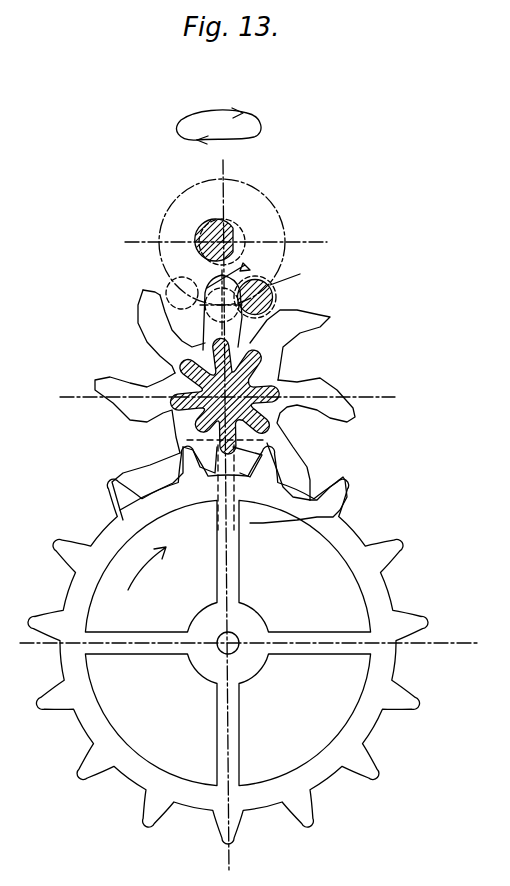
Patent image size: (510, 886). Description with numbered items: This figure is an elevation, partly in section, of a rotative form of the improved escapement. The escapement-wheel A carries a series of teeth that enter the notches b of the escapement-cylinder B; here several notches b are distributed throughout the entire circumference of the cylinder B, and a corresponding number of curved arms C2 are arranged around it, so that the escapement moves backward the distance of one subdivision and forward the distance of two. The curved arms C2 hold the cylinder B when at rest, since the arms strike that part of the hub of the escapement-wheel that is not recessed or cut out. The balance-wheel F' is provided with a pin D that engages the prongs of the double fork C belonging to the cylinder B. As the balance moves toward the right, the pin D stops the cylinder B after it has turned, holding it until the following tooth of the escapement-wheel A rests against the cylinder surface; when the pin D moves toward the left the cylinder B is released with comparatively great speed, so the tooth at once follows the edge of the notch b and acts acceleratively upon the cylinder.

The escapement-wheel A is at (228, 645).
The escapement-cylinder B is at (226, 397).
The notch b is at (223, 382).
The double fork C is at (171, 331).
The curved arms C2 is at (225, 416).
The balance-wheel F' is at (214, 242).
The pin D is at (254, 290).